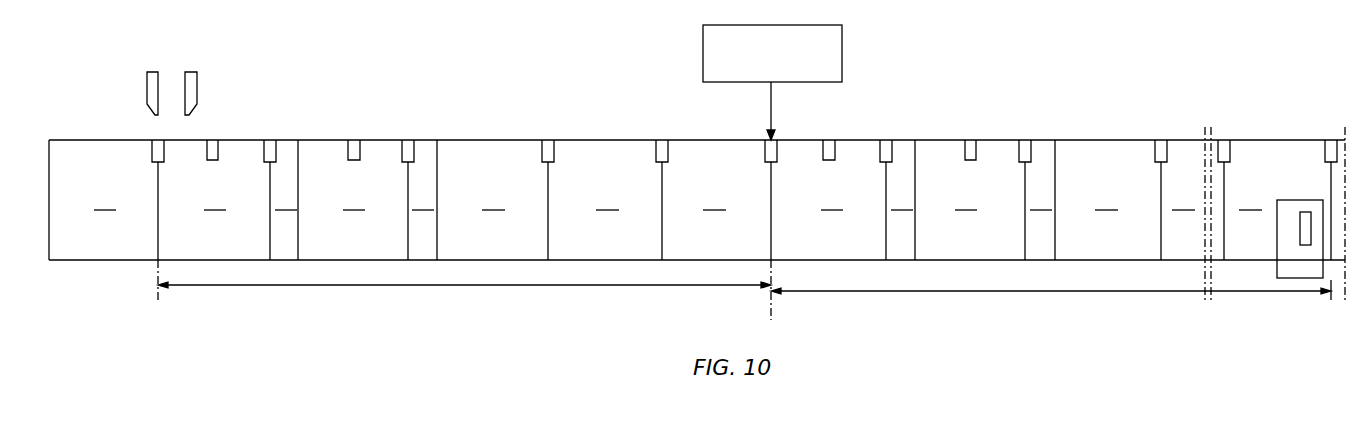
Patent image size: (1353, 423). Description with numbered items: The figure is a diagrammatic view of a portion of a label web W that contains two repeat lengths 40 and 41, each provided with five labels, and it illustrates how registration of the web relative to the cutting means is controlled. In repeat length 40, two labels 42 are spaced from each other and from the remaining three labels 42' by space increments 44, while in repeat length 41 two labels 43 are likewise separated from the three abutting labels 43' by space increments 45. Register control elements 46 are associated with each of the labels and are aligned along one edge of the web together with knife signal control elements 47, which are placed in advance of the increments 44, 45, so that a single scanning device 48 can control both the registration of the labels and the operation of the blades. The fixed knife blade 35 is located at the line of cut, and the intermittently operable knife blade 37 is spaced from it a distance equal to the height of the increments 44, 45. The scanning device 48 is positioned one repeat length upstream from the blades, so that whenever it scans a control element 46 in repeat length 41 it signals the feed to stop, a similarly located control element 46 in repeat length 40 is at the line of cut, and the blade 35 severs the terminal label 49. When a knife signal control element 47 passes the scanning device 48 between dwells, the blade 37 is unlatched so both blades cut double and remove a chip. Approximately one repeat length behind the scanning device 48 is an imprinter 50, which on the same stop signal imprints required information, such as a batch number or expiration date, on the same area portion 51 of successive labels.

The knife blade 35 is at (147, 90).
The knife blade 37 is at (197, 90).
The repeat length 40 is at (433, 286).
The repeat length 41 is at (1033, 290).
The label 42 is at (261, 211).
The label 42' is at (626, 211).
The label 43 is at (923, 211).
The label 43' is at (1213, 211).
The space increment 44 is at (356, 200).
The space increment 45 is at (973, 200).
The register control element 46 is at (159, 141).
The knife signal control element 47 is at (213, 141).
The scanning device 48 is at (829, 32).
The terminal label 49 is at (105, 201).
The imprinter 50 is at (1285, 272).
The area portion 51 is at (1305, 212).
The label web W is at (1107, 140).